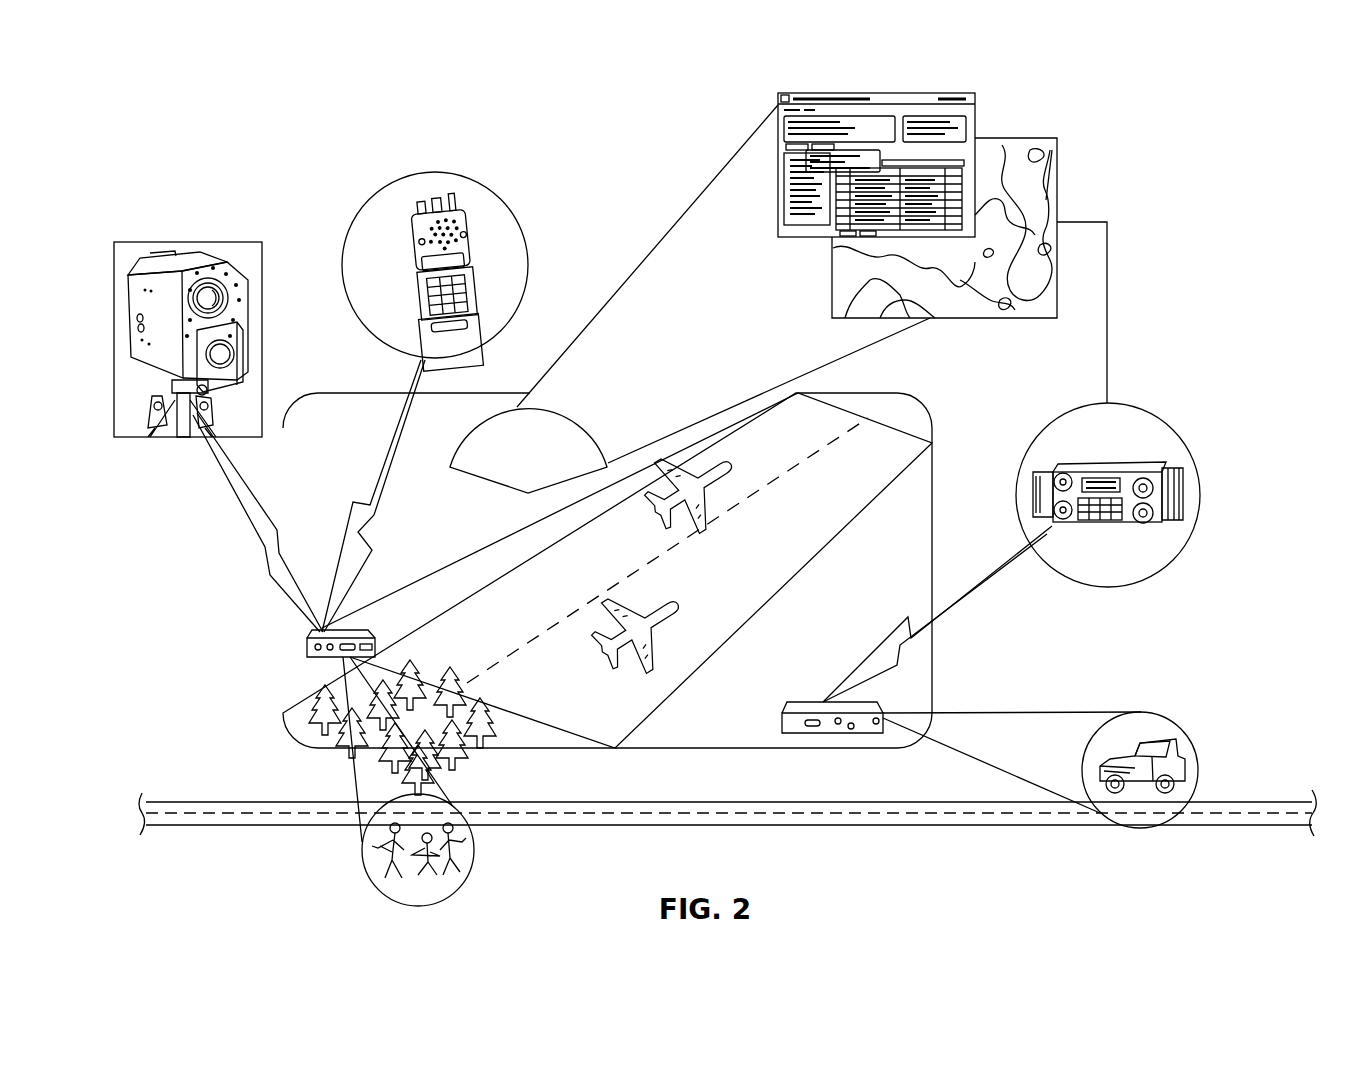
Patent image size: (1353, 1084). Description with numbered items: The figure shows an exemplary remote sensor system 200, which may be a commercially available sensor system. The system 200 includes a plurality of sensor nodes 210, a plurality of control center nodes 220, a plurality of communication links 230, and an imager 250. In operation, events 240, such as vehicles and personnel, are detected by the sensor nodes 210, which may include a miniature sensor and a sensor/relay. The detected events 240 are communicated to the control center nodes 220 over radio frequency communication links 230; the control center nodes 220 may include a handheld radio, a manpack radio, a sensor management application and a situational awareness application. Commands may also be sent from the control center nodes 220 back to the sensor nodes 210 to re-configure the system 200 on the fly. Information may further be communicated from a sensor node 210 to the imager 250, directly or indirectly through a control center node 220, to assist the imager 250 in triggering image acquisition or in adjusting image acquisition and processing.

The remote sensor system 200 is at (186, 121).
The sensor nodes 210 is at (306, 650).
The control center nodes 220 is at (447, 173).
The communication links 230 is at (237, 507).
The events 240 is at (418, 905).
The imager 250 is at (187, 242).